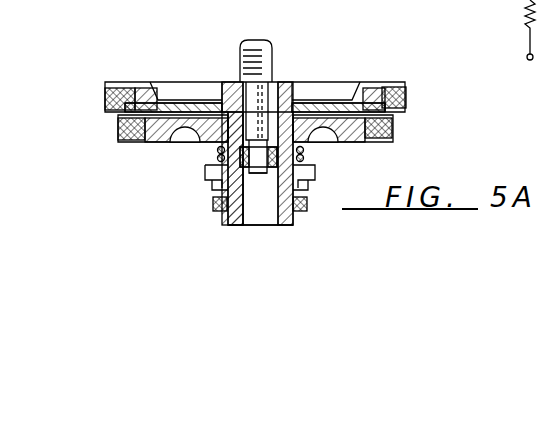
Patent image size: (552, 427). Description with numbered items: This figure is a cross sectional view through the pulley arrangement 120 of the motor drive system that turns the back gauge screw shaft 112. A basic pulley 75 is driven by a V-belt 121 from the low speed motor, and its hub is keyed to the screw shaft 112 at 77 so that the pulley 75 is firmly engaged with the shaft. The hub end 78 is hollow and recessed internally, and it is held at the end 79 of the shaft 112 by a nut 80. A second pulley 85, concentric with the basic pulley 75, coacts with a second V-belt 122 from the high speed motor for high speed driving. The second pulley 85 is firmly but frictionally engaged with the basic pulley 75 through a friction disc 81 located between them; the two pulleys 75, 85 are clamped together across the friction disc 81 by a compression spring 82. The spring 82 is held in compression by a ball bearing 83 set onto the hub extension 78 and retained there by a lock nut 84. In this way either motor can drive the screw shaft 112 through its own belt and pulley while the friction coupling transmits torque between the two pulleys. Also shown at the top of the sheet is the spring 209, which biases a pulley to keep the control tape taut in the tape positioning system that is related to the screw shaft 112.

The pulley arrangement 120 is at (158, 78).
The basic pulley 75 is at (167, 102).
The V-belt 121 is at (105, 95).
The friction disc 81 is at (320, 113).
The second pulley 85 is at (152, 143).
The V-belt 122 is at (116, 129).
The keyed connection 77 is at (282, 84).
The back gauge screw shaft 112 is at (272, 60).
The shaft end 79 is at (260, 168).
The nut 80 is at (272, 160).
The hub end 78 is at (240, 224).
The compression spring 82 is at (213, 158).
The ball bearing 83 is at (317, 184).
The lock nut 84 is at (303, 200).
The spring 209 is at (526, 7).